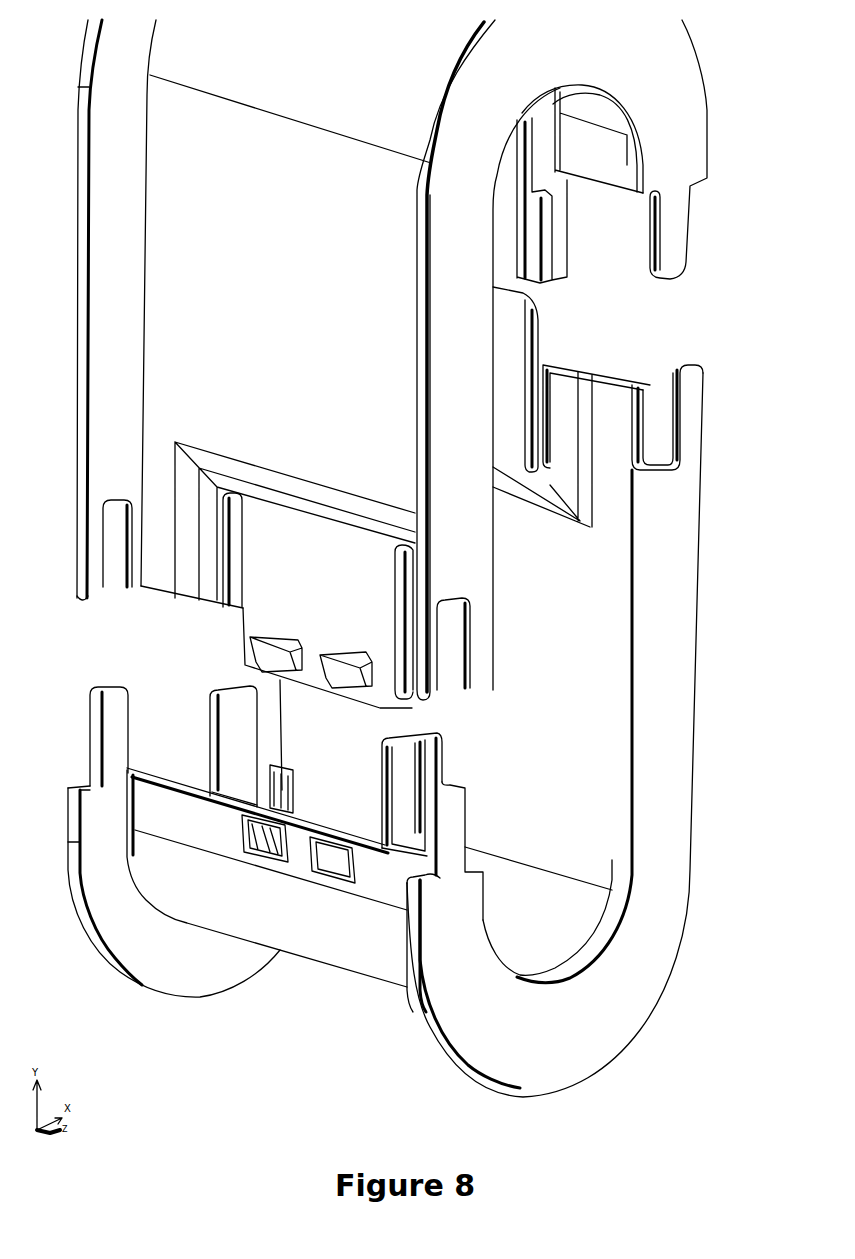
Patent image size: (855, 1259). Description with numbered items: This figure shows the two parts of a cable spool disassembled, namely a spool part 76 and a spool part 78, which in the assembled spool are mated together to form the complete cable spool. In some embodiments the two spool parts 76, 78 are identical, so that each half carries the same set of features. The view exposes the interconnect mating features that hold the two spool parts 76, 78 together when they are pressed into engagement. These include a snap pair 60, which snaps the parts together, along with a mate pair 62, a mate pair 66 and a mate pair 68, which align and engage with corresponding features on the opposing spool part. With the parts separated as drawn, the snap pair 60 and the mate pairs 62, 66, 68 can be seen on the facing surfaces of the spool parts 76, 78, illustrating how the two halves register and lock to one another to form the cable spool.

The snap pair 60 is at (347, 681).
The mate pair 62 is at (220, 689).
The mate pair 66 is at (403, 738).
The mate pair 68 is at (108, 689).
The spool part 76 is at (87, 193).
The spool part 78 is at (674, 971).